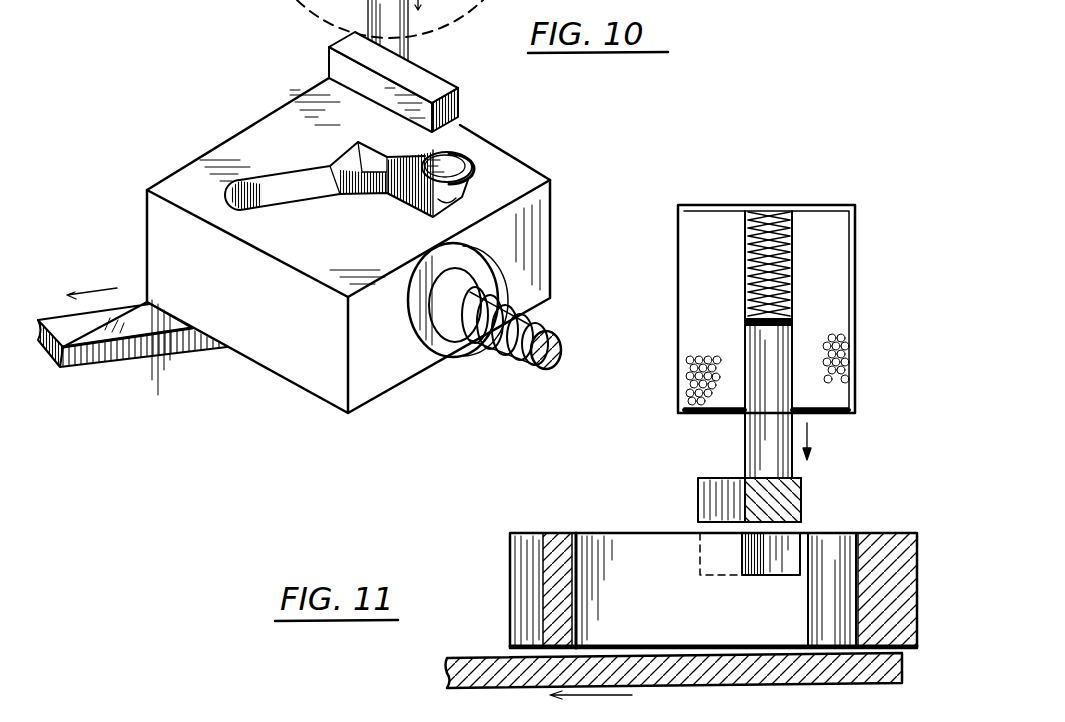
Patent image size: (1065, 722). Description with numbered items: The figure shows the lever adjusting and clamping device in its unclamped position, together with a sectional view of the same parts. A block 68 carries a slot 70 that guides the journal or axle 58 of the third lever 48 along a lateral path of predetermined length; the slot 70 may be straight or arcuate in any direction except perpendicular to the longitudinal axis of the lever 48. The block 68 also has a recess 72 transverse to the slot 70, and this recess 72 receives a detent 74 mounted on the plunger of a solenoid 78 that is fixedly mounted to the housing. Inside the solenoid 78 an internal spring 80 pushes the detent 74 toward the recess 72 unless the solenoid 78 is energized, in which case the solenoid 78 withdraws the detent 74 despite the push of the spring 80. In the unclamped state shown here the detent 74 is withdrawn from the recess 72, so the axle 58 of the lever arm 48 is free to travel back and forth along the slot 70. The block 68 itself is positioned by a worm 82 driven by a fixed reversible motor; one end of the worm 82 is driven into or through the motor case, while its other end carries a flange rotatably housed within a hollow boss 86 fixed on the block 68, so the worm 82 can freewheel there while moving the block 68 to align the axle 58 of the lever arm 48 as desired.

In FIG. 10, the third lever 48 is at (167, 347).
In FIG. 11, the third lever 48 is at (735, 683).
In FIG. 10, the journal 58 is at (452, 163).
In FIG. 11, the journal 58 is at (846, 536).
In FIG. 10, the block 68 is at (277, 347).
In FIG. 10, the slot 70 is at (258, 173).
In FIG. 10, the recess 72 is at (447, 200).
In FIG. 11, the recess 72 is at (794, 540).
In FIG. 10, the detent 74 is at (438, 90).
In FIG. 11, the detent 74 is at (802, 485).
In FIG. 11, the solenoid 78 is at (856, 239).
In FIG. 11, the spring 80 is at (780, 290).
In FIG. 10, the worm 82 is at (508, 367).
In FIG. 10, the hollow boss 86 is at (443, 343).